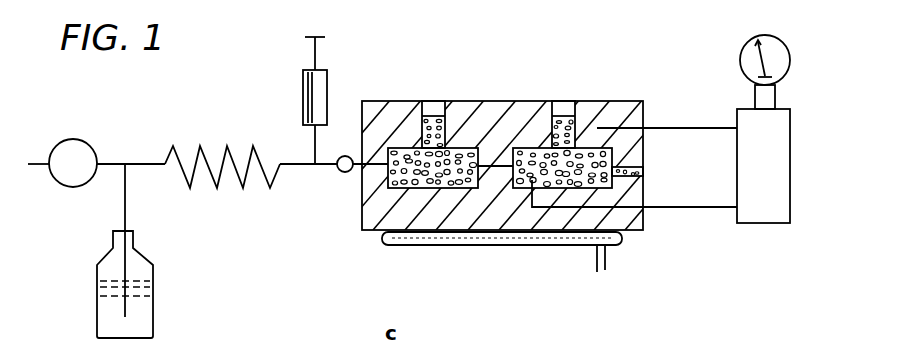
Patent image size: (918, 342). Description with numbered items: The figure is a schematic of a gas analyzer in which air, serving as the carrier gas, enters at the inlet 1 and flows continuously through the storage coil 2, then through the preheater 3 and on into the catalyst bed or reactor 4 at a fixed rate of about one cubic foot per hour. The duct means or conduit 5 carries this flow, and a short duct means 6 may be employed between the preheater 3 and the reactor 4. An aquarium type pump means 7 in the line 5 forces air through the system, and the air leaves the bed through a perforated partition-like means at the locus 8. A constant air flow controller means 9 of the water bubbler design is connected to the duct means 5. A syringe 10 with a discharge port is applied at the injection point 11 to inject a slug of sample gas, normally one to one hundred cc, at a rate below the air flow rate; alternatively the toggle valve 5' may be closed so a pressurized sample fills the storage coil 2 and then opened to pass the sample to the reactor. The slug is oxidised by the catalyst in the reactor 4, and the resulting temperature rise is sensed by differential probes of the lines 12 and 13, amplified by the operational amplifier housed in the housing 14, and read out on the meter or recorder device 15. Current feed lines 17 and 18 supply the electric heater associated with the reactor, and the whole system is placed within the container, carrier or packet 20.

The air inlet 1 is at (37, 167).
The storage coil 2 is at (216, 186).
The preheater 3 is at (419, 139).
The catalyst bed or reactor 4 is at (527, 130).
The duct means or conduit 5 is at (131, 145).
The toggle valve 5' is at (418, 184).
The short duct means 6 is at (436, 149).
The aquarium type pump means 7 is at (59, 144).
The perforated partition-like means 8 is at (612, 153).
The constant air flow controller means 9 is at (97, 284).
The syringe 10 is at (328, 71).
The injection point 11 is at (318, 163).
The differential probe line 12 is at (693, 128).
The differential probe line 13 is at (672, 208).
The operational amplifier housing 14 is at (771, 179).
The meter or recorder device 15 is at (790, 50).
The current feed line 17 is at (597, 262).
The current feed line 18 is at (607, 263).
The container, carrier or packet 20 is at (515, 101).